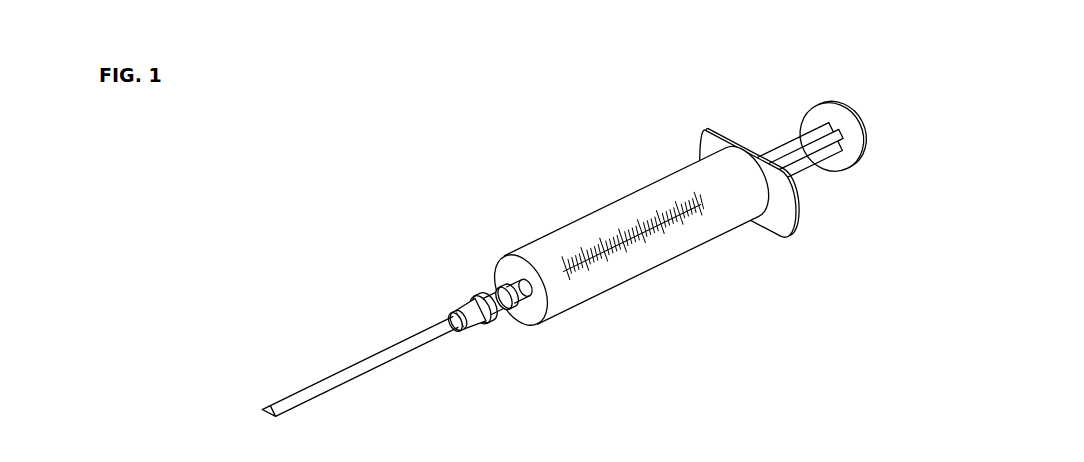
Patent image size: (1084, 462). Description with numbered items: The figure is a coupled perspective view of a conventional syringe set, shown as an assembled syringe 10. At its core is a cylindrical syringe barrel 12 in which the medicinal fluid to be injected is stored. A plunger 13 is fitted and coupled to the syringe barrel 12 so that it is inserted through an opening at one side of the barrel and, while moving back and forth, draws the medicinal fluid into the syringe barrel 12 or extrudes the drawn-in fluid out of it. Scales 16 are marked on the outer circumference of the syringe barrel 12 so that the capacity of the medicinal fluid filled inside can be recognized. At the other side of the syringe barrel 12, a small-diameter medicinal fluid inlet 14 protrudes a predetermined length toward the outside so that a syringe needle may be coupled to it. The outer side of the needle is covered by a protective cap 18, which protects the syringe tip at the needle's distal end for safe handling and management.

The syringe 10 is at (502, 128).
The syringe barrel 12 is at (628, 205).
The plunger 13 is at (810, 160).
The medicinal fluid inlet 14 is at (520, 286).
The scales 16 is at (676, 227).
The protective cap 18 is at (429, 338).